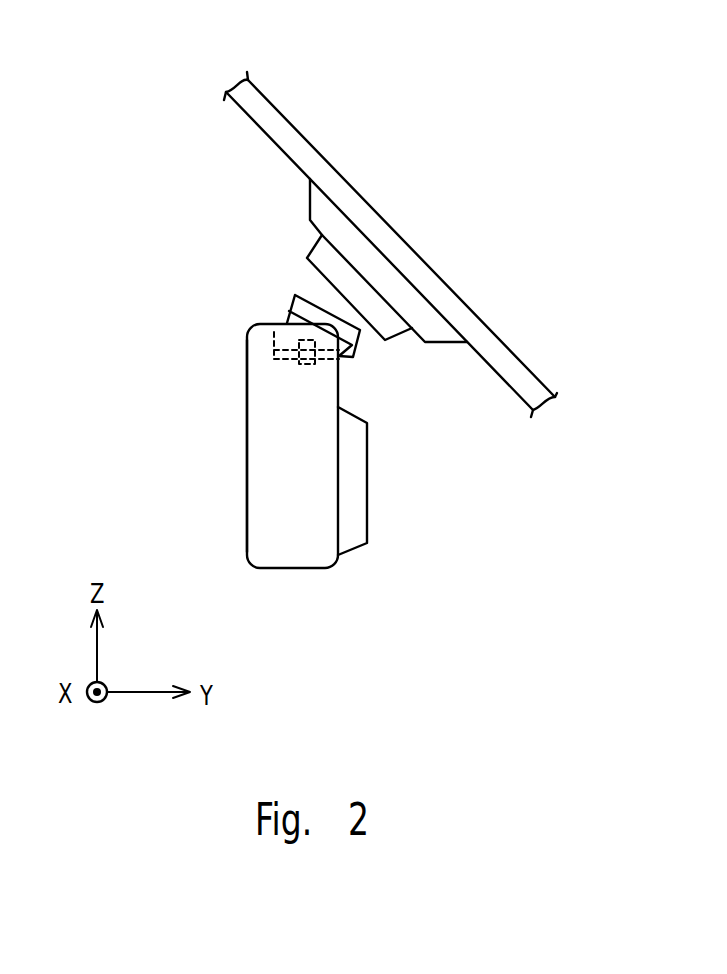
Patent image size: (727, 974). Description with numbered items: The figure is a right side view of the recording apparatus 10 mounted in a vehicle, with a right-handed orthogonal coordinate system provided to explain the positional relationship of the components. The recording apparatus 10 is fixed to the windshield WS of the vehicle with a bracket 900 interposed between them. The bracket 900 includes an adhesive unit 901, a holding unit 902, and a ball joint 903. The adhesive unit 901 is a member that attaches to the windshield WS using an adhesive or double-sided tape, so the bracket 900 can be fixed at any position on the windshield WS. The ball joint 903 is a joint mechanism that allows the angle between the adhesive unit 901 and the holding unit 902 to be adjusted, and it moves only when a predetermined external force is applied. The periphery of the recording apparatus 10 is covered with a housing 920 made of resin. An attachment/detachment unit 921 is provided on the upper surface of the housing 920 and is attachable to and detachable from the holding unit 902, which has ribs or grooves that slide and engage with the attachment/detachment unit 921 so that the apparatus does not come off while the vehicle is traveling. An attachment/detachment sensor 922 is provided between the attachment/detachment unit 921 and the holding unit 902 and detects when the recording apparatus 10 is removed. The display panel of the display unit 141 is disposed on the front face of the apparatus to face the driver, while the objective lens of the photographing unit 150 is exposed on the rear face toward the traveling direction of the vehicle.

The windshield WS is at (305, 138).
The bracket 900 is at (307, 261).
The adhesive unit 901 is at (310, 214).
The ball joint 903 is at (327, 281).
The holding unit 902 is at (357, 352).
The recording apparatus 10 is at (287, 414).
The housing 920 is at (247, 355).
The attachment/detachment unit 921 is at (272, 330).
The attachment/detachment sensor 922 is at (315, 364).
The display unit 141 is at (227, 453).
The photographing unit 150 is at (383, 490).